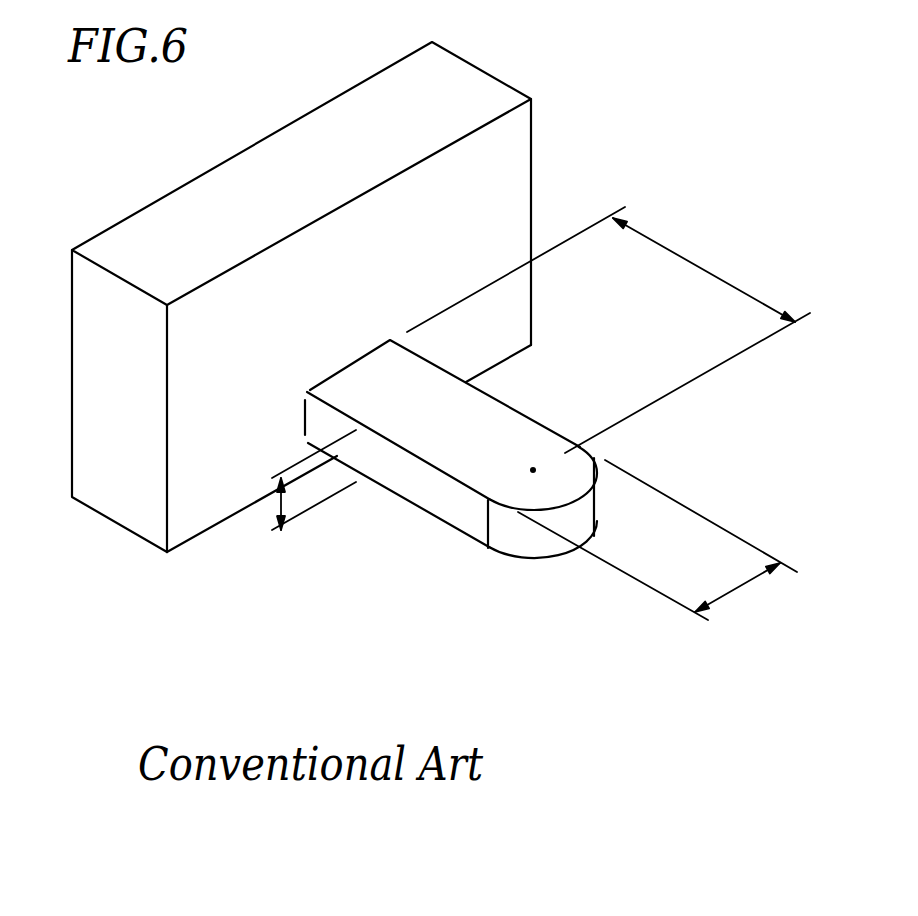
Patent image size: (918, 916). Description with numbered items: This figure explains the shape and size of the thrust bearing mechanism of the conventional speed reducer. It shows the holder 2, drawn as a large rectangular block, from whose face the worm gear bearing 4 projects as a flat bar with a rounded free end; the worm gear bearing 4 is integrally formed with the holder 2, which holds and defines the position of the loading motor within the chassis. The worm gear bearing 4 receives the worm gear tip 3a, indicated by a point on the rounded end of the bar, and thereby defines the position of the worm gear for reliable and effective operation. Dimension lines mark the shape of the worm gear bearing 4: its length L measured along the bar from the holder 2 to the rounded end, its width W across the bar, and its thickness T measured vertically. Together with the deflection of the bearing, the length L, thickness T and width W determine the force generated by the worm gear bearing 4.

The holder 2 is at (202, 455).
The worm gear bearing 4 is at (443, 503).
The worm gear tip 3a is at (533, 470).
The length L is at (608, 330).
The width W is at (657, 540).
The thickness T is at (283, 495).